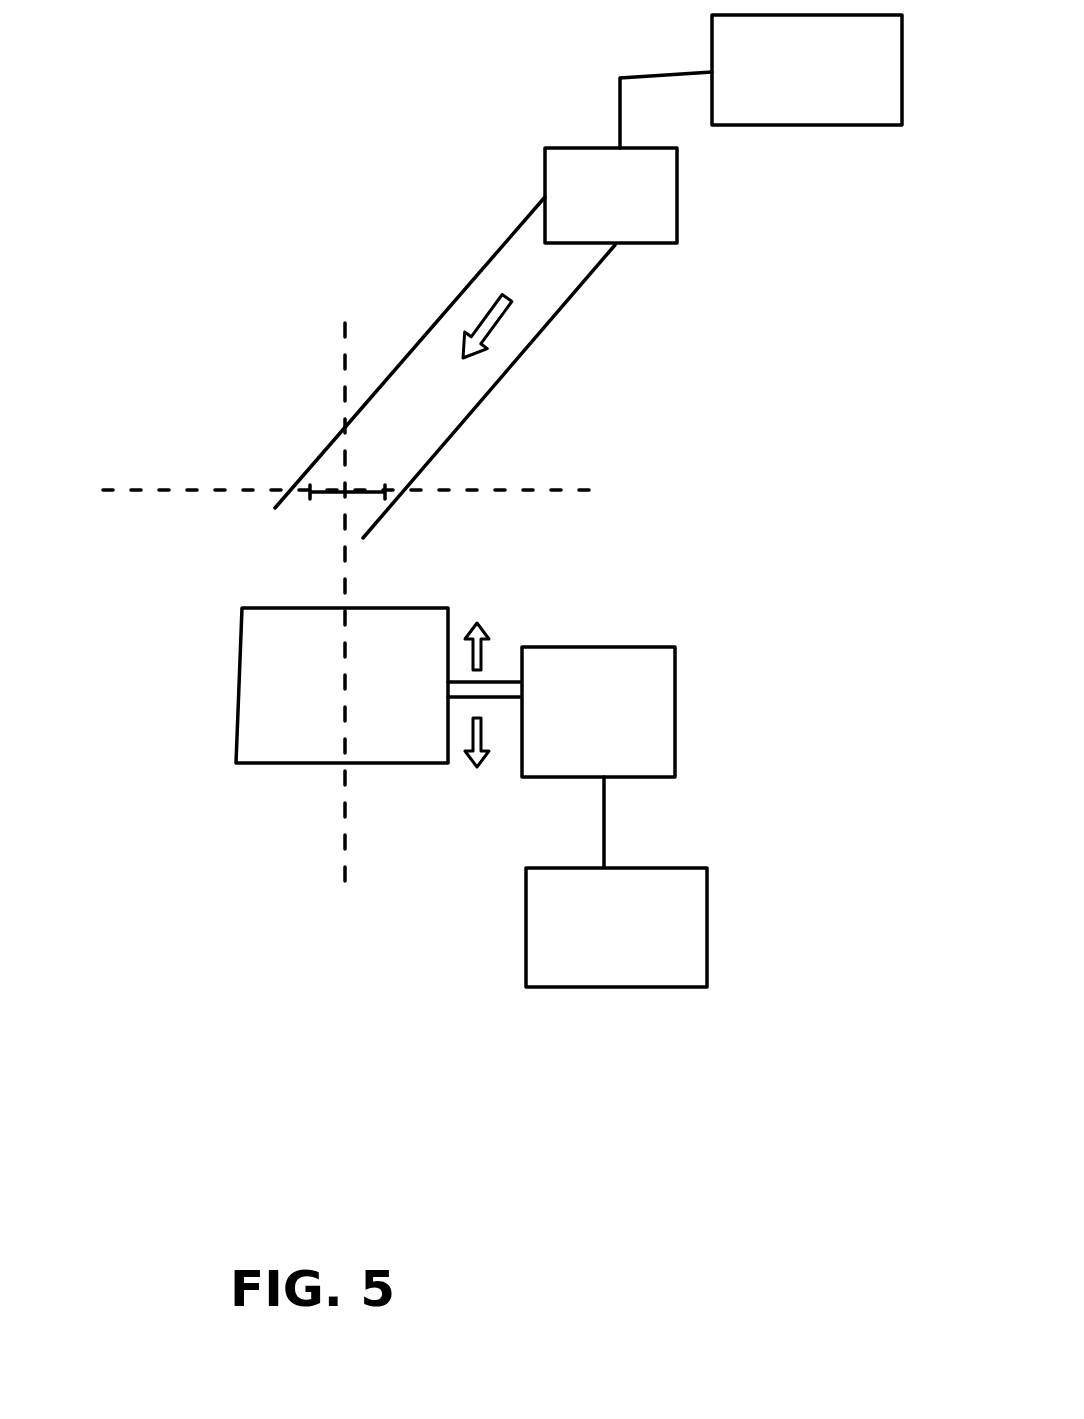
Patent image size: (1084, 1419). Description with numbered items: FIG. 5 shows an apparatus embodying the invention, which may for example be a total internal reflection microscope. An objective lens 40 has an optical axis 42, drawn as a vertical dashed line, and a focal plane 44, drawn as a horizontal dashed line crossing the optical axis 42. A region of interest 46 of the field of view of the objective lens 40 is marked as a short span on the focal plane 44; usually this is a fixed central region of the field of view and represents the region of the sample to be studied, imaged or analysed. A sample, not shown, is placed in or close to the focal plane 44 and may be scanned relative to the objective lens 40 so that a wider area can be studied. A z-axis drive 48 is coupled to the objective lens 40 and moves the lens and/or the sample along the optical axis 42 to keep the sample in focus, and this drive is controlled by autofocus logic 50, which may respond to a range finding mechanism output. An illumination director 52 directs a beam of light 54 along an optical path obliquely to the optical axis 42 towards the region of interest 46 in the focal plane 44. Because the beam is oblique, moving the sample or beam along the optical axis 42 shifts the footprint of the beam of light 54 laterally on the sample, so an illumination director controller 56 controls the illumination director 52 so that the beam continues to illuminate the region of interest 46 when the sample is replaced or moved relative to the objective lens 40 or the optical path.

The objective lens 40 is at (260, 742).
The optical axis 42 is at (345, 362).
The focal plane 44 is at (582, 485).
The region of interest 46 is at (333, 498).
The z-axis drive 48 is at (657, 670).
The autofocus logic 50 is at (688, 963).
The illumination director 52 is at (660, 220).
The beam of light 54 is at (477, 305).
The illumination director controller 56 is at (875, 110).